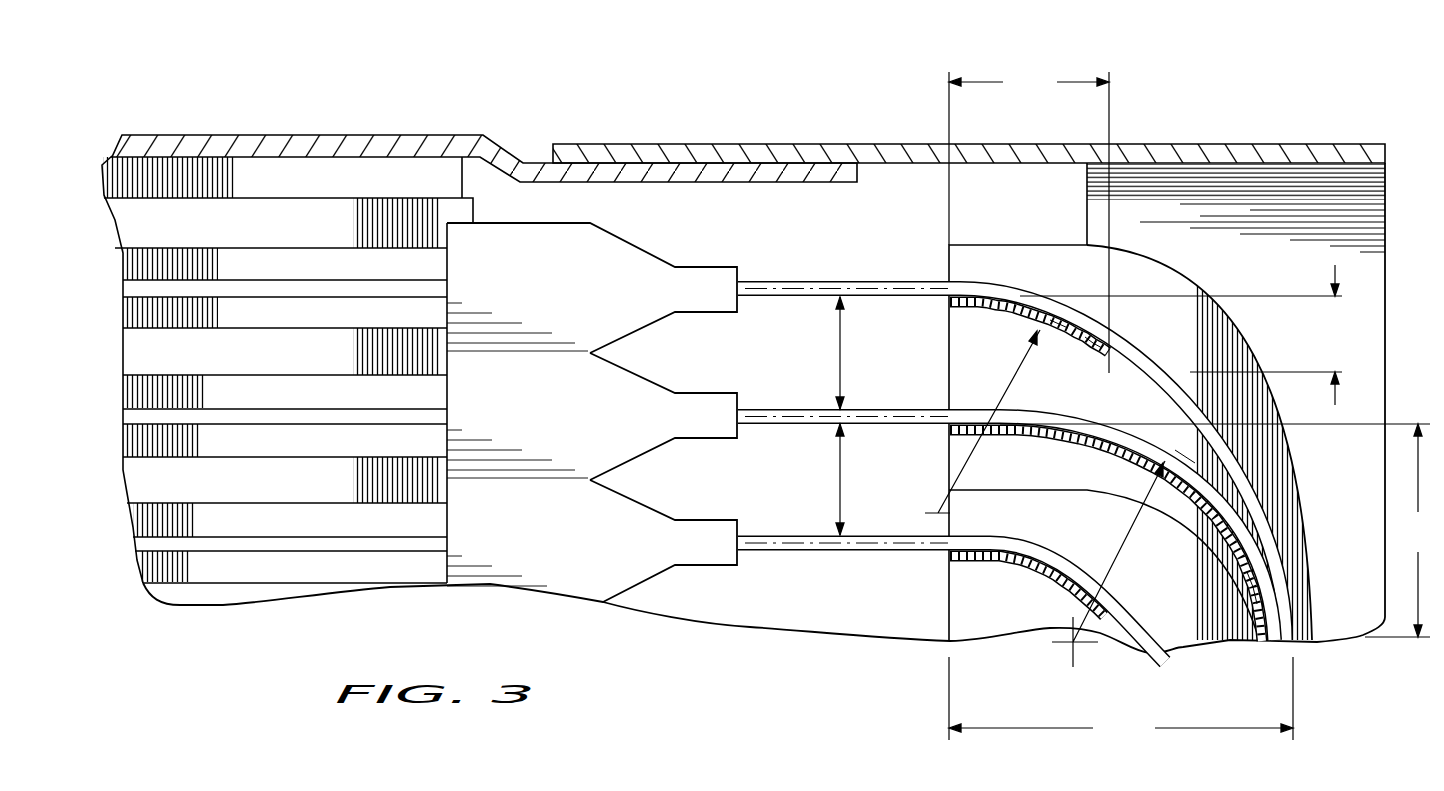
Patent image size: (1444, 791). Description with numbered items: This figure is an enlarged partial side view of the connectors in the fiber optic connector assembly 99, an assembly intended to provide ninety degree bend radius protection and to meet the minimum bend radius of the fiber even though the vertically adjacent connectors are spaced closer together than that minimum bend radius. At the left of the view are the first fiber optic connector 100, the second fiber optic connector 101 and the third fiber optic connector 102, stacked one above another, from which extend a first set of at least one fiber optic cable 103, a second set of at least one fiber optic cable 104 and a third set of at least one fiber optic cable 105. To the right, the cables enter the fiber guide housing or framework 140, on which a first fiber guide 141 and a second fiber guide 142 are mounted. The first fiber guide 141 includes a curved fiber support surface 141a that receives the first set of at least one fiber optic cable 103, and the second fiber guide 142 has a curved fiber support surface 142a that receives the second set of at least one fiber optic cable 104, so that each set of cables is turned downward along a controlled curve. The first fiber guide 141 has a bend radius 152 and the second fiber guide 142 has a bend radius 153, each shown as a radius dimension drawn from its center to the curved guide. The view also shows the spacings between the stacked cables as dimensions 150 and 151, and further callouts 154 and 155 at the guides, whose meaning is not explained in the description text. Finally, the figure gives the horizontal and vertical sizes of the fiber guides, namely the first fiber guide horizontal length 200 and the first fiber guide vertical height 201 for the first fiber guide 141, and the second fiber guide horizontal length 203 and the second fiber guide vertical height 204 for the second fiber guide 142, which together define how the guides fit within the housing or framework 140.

The fiber optic connector assembly 99 is at (885, 127).
The first fiber optic connector 100 is at (568, 292).
The second fiber optic connector 101 is at (570, 420).
The third fiber optic connector 102 is at (568, 549).
The first set of at least one fiber optic cable 103 is at (780, 285).
The second set of at least one fiber optic cable 104 is at (785, 418).
The third set of at least one fiber optic cable 105 is at (790, 553).
The fiber guide housing or framework 140 is at (1145, 283).
The first fiber guide 141 is at (1040, 332).
The curved fiber support surface 141a is at (1090, 337).
The second fiber guide 142 is at (1113, 435).
The curved fiber support surface 142a is at (1253, 507).
The fiber pitch spacing 150 is at (843, 353).
The fiber pitch spacing 151 is at (845, 479).
The bend radius 152 is at (1004, 392).
The bend radius 153 is at (1129, 530).
The guide wall thickness 154 is at (1063, 315).
The gap between fiber and sleeve 155 is at (1183, 443).
The first fiber guide horizontal length 200 is at (1029, 221).
The first fiber guide vertical height 201 is at (1188, 335).
The second fiber guide horizontal length 203 is at (1121, 700).
The second fiber guide vertical height 204 is at (1222, 530).